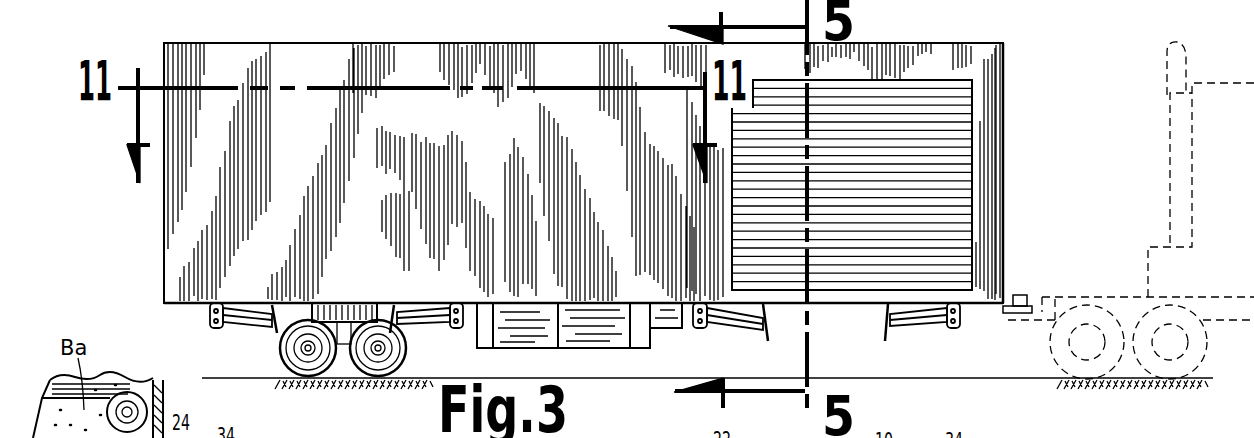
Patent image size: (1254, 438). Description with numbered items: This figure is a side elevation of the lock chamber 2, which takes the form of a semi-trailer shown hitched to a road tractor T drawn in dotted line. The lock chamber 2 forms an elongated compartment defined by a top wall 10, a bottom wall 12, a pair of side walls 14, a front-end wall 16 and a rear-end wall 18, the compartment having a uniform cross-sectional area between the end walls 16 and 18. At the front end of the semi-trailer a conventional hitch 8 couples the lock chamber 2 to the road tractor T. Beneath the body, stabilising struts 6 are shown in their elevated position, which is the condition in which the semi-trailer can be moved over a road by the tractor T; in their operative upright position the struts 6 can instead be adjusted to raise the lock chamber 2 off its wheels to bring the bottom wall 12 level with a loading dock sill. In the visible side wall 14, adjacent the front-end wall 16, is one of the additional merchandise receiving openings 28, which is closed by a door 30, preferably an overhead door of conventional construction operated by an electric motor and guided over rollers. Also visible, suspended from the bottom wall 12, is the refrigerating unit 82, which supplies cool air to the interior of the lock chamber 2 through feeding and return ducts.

The lock chamber 2 is at (158, 280).
The stabilising struts 6 is at (247, 325).
The hitch 8 is at (1022, 295).
The top wall 10 is at (413, 43).
The bottom wall 12 is at (182, 307).
The side walls 14 is at (317, 57).
The front-end wall 16 is at (997, 121).
The rear-end wall 18 is at (163, 221).
The additional merchandise receiving openings 28 is at (963, 160).
The door 30 is at (920, 97).
The refrigerating unit 82 is at (582, 333).
The road tractor T is at (1200, 175).